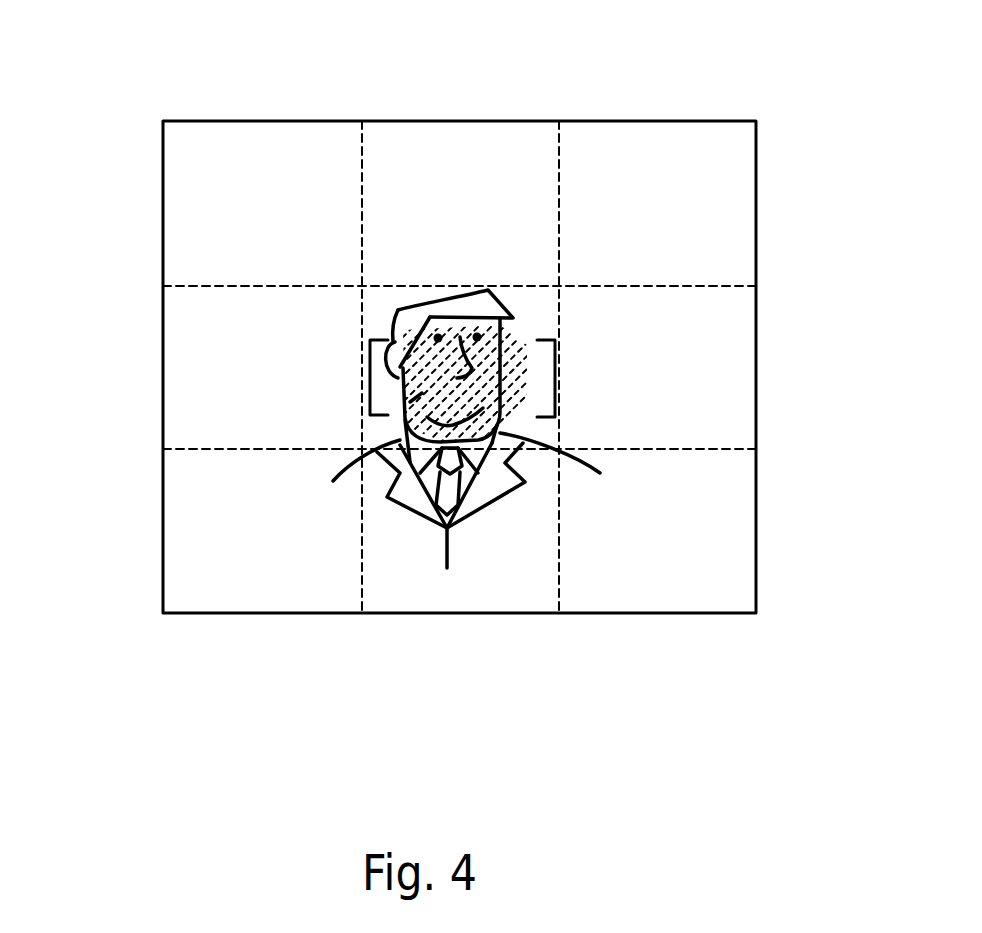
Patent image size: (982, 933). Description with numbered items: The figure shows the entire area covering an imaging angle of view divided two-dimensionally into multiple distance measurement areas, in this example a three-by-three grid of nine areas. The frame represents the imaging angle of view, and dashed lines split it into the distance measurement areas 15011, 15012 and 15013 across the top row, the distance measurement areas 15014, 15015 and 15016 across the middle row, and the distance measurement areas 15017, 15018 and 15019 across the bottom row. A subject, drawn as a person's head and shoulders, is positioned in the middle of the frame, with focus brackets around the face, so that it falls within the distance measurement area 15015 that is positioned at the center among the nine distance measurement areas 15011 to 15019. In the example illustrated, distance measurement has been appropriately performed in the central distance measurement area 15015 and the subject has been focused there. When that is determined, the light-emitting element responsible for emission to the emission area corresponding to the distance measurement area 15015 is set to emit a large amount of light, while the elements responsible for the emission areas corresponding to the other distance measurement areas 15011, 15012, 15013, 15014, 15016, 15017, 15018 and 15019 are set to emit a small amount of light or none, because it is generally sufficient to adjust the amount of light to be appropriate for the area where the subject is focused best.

The distance measurement area 15011 is at (255, 160).
The distance measurement area 15012 is at (437, 160).
The distance measurement area 15013 is at (628, 168).
The distance measurement area 15014 is at (205, 318).
The distance measurement area 15015 is at (527, 315).
The distance measurement area 15016 is at (712, 390).
The distance measurement area 15017 is at (233, 592).
The distance measurement area 15018 is at (400, 587).
The distance measurement area 15019 is at (648, 585).